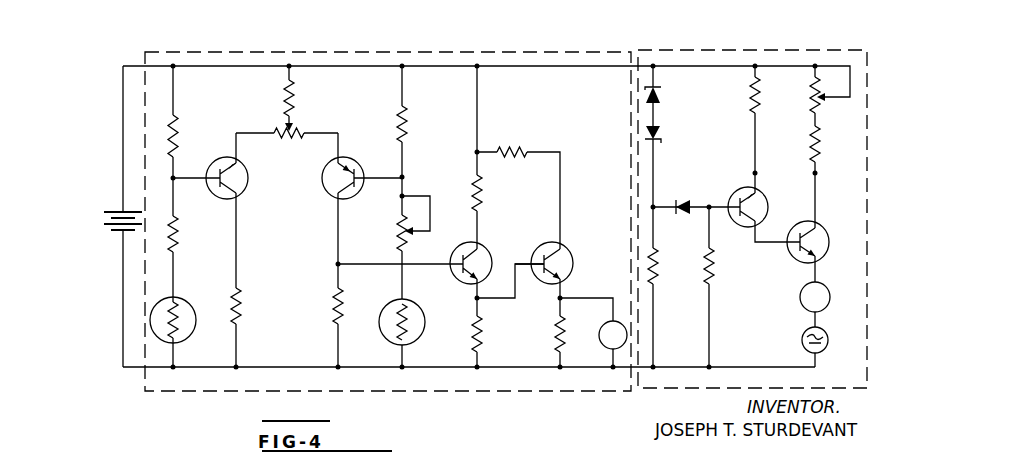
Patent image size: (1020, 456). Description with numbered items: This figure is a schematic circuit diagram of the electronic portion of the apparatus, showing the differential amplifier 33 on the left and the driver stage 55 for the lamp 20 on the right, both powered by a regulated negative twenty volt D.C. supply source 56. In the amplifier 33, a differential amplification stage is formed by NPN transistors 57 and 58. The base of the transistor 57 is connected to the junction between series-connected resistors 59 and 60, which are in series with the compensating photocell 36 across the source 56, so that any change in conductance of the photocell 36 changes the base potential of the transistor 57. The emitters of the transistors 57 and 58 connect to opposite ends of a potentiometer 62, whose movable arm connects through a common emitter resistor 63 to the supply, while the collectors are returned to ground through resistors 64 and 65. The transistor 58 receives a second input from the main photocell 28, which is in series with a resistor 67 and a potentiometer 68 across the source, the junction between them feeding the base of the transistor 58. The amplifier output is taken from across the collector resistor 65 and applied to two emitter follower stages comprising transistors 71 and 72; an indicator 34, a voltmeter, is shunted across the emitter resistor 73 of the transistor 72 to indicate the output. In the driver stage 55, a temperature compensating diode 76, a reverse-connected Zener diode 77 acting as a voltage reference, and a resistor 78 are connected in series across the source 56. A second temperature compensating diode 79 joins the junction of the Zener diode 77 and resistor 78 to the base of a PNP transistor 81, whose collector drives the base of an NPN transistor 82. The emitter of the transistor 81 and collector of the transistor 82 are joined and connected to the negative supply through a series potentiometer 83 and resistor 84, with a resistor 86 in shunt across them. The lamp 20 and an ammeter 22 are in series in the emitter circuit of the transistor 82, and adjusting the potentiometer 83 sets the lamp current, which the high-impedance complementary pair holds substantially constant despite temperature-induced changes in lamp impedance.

The differential amplifier 33 is at (268, 48).
The driver stage 55 is at (762, 42).
The regulated negative D.C. supply source 56 is at (108, 213).
The resistor 59 is at (176, 122).
The resistor 60 is at (178, 235).
The compensating photocell 36 is at (190, 306).
The NPN transistor 57 is at (243, 195).
The potentiometer 62 is at (300, 140).
The resistor 63 is at (296, 90).
The NPN transistor 58 is at (355, 162).
The resistor 64 is at (243, 300).
The collector resistor 65 is at (332, 297).
The resistor 67 is at (406, 120).
The potentiometer 68 is at (398, 231).
The main photocell 28 is at (422, 332).
The emitter follower transistor 71 is at (483, 249).
The emitter follower transistor 72 is at (566, 249).
The emitter resistor 73 is at (556, 330).
The indicator 34 is at (613, 320).
The temperature compensating diode 76 is at (660, 93).
The Zener diode 77 is at (664, 132).
The temperature compensating diode 79 is at (684, 200).
The resistor 78 is at (659, 265).
The resistor 86 is at (751, 95).
The potentiometer 83 is at (812, 88).
The resistor 84 is at (811, 139).
The PNP transistor 81 is at (736, 196).
The NPN transistor 82 is at (791, 256).
The ammeter 22 is at (800, 297).
The lamp 20 is at (803, 340).